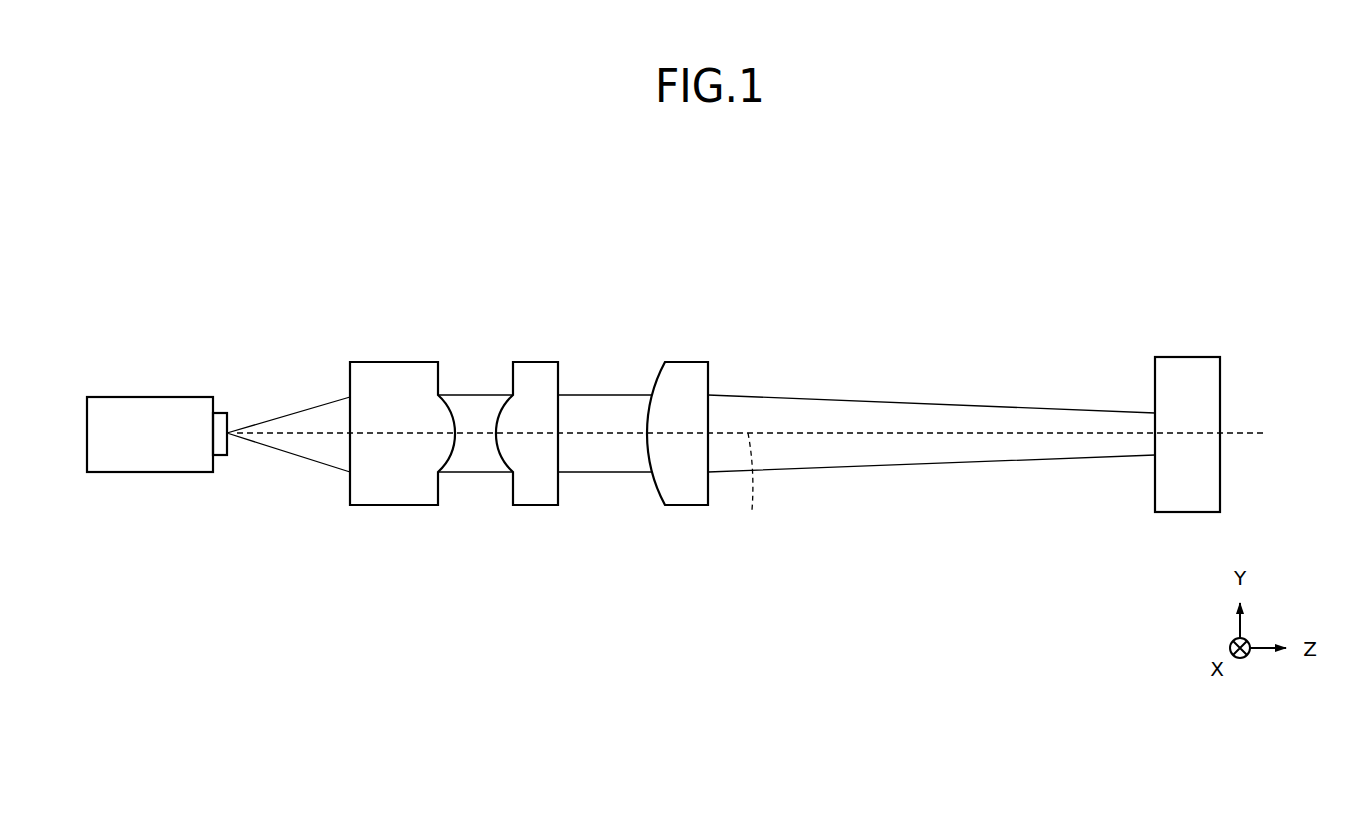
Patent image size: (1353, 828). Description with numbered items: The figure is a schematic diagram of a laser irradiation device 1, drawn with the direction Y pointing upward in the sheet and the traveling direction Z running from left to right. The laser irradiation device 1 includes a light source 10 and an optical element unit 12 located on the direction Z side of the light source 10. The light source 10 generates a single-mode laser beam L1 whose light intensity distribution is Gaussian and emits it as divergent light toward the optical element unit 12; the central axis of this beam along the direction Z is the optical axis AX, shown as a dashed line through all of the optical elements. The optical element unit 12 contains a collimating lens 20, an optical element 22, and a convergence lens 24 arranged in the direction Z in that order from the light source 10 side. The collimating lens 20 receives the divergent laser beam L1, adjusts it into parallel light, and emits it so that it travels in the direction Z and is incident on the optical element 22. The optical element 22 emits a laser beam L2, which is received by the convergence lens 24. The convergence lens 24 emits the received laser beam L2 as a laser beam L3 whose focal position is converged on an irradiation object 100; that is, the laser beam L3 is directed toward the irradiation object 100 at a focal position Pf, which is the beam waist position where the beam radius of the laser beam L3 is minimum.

The laser irradiation device 1 is at (806, 187).
The light source 10 is at (176, 384).
The optical element unit 12 is at (514, 239).
The collimating lens 20 is at (406, 351).
The optical element 22 is at (538, 351).
The convergence lens 24 is at (691, 351).
The irradiation object 100 is at (1198, 346).
The laser beam L1 is at (280, 452).
The laser beam L2 is at (607, 475).
The laser beam L3 is at (1120, 457).
The optical axis AX is at (750, 486).
The focal position Pf is at (1157, 443).